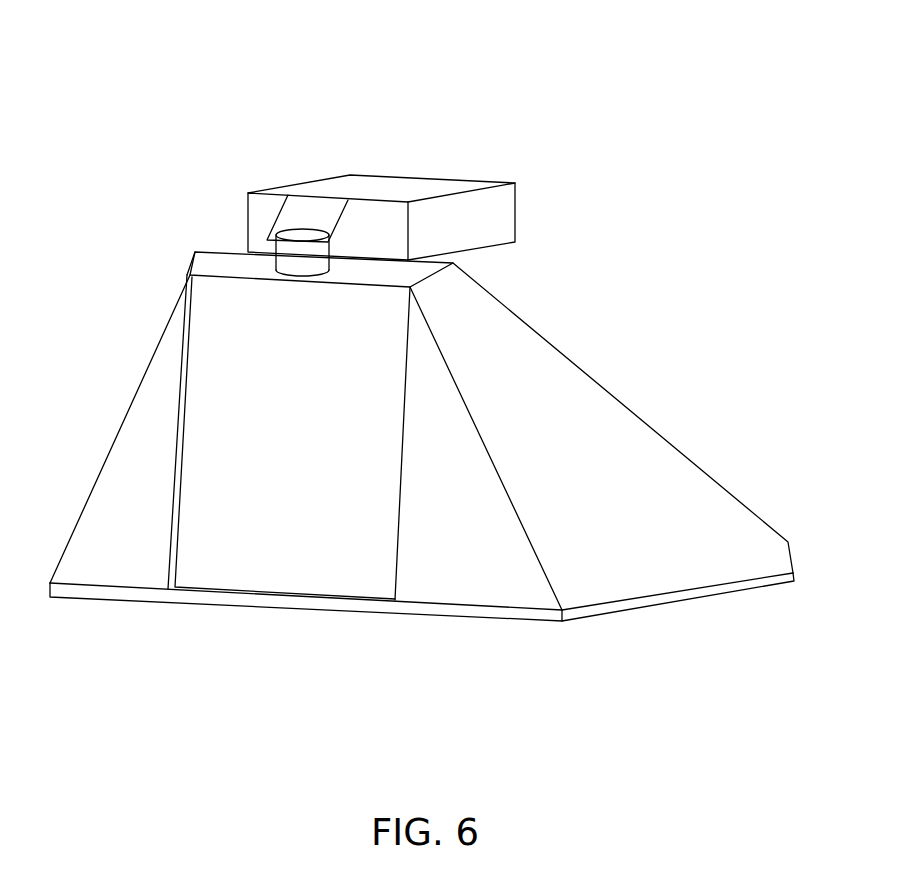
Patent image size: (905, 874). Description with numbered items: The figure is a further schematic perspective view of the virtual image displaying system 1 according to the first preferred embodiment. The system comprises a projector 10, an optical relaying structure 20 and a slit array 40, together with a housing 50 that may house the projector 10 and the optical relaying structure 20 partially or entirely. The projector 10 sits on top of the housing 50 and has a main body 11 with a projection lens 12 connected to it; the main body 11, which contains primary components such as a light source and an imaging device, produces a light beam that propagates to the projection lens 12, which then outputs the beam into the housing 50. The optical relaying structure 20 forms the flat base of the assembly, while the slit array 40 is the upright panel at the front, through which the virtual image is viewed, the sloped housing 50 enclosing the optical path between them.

The virtual image displaying system 1 is at (196, 52).
The projector 10 is at (287, 116).
The main body 11 is at (396, 187).
The projection lens 12 is at (298, 207).
The optical relaying structure 20 is at (505, 618).
The slit array 40 is at (250, 560).
The housing 50 is at (683, 460).